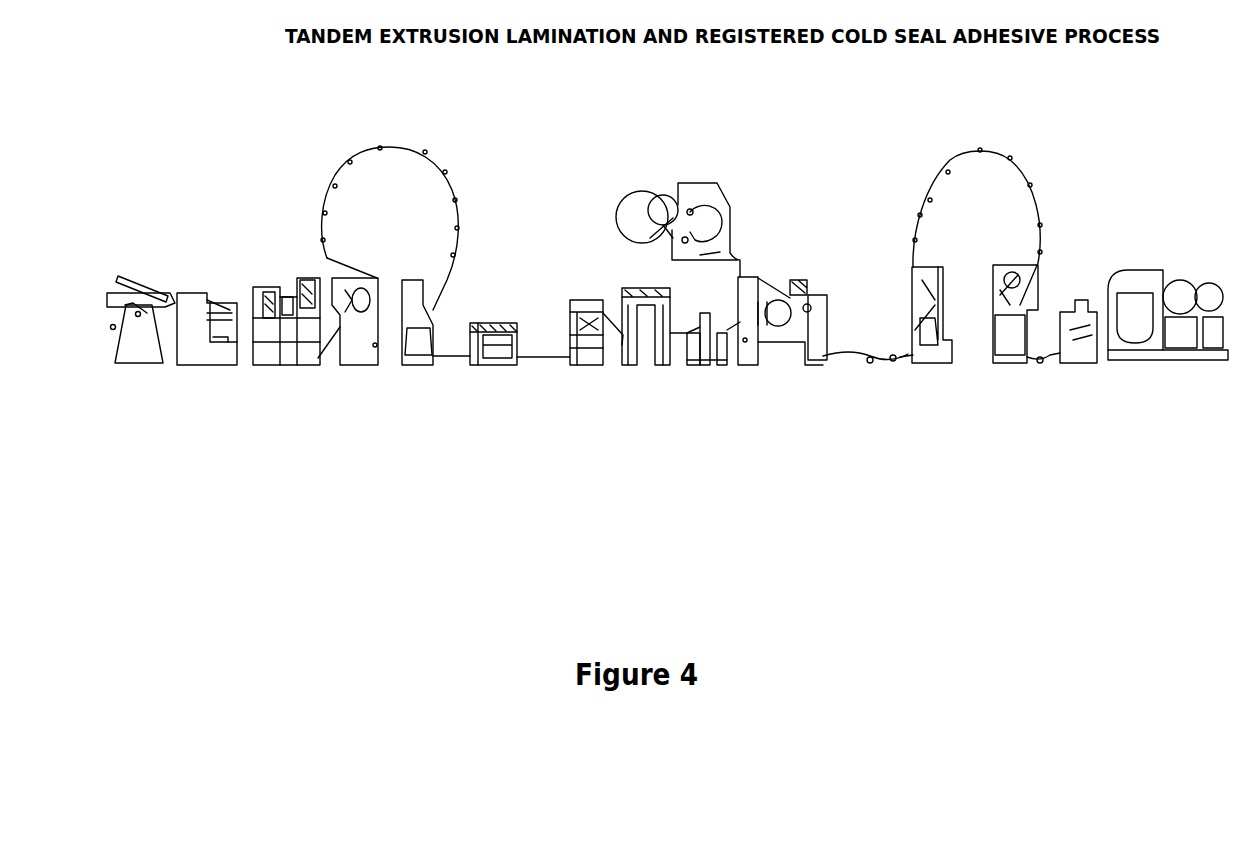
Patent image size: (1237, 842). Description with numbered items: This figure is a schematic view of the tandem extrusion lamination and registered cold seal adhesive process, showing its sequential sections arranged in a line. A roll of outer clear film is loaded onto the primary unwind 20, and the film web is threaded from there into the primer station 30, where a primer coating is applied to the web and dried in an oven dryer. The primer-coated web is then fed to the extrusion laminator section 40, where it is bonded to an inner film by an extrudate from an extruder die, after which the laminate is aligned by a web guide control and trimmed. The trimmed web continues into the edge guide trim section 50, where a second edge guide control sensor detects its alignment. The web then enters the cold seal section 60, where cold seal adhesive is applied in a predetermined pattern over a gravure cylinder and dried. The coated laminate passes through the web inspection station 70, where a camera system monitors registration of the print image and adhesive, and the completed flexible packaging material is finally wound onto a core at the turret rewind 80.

The primary unwind 20 is at (1168, 371).
The primer station 30 is at (996, 297).
The extrusion laminator section 40 is at (739, 328).
The edge guide trim section 50 is at (514, 425).
The cold seal section 60 is at (361, 323).
The web inspection station 70 is at (260, 396).
The turret rewind 80 is at (152, 375).